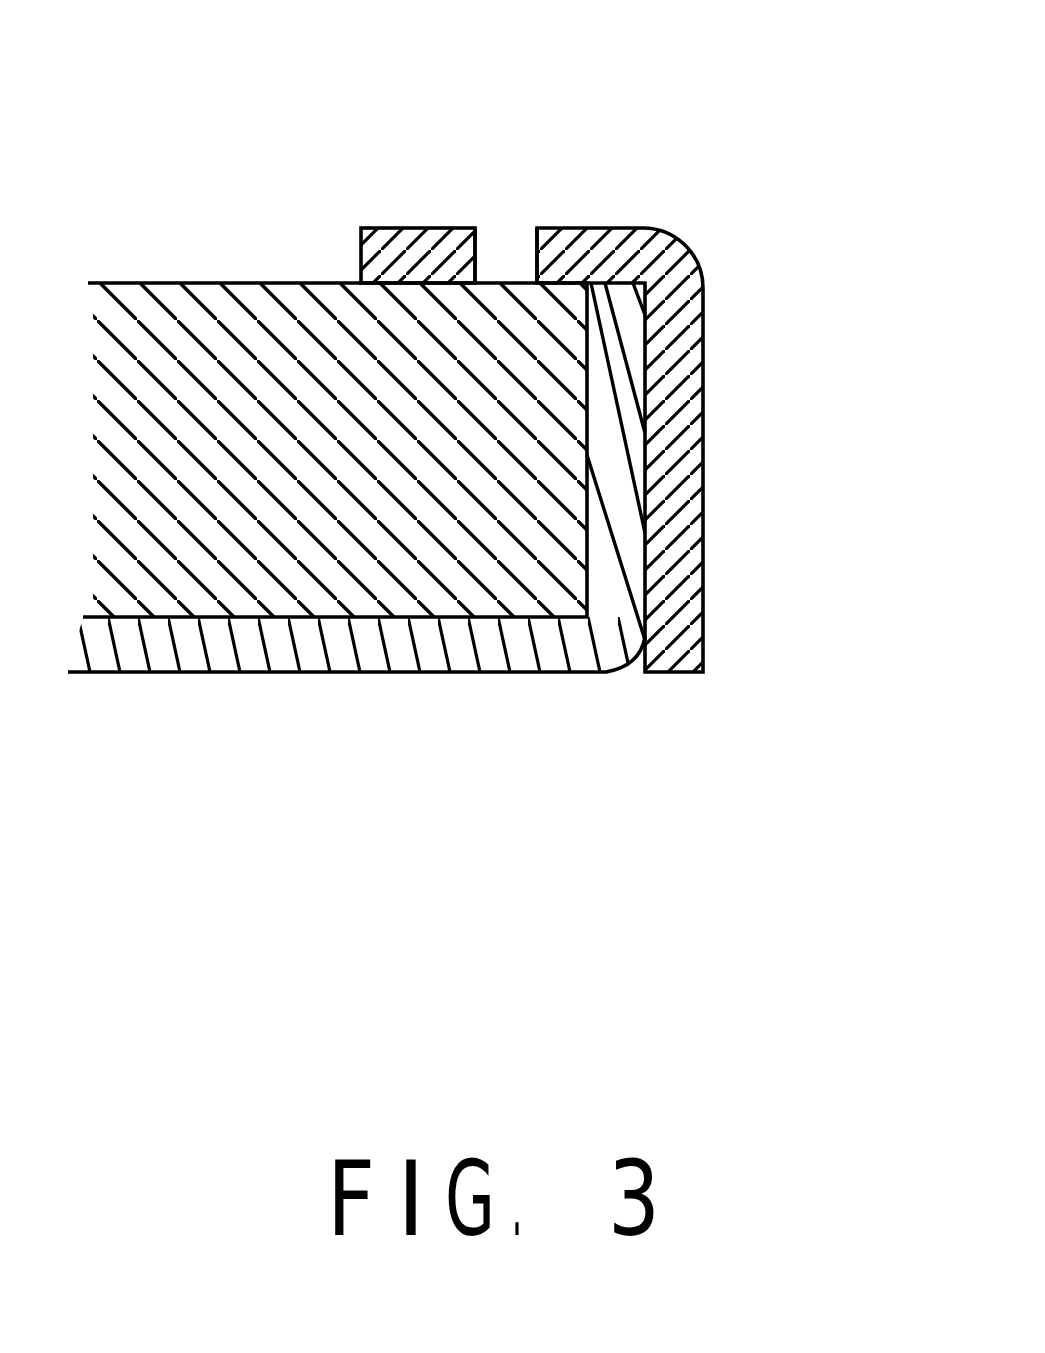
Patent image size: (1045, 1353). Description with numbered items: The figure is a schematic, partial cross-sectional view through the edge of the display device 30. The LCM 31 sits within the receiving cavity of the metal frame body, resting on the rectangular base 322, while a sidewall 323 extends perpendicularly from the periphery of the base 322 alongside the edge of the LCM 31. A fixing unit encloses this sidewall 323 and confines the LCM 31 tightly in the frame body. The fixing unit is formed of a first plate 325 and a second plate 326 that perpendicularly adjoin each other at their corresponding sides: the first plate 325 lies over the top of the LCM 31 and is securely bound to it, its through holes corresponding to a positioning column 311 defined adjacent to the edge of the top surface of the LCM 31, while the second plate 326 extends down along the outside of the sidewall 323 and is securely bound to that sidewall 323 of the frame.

The display device 30 is at (517, 55).
The LCM 31 is at (232, 320).
The first plate 325 is at (412, 240).
The positioning column 311 is at (507, 240).
The sidewall 323 is at (630, 322).
The second plate 326 is at (703, 557).
The base 322 is at (251, 647).